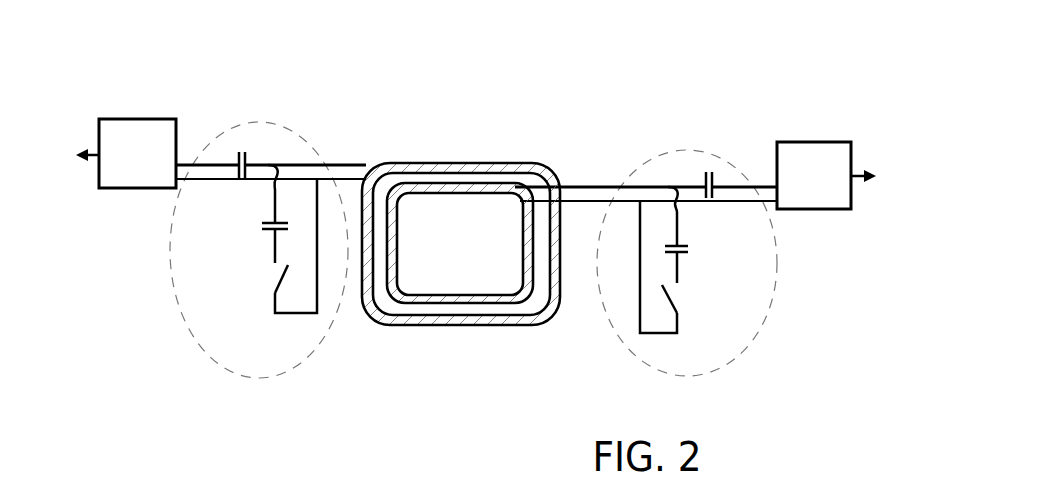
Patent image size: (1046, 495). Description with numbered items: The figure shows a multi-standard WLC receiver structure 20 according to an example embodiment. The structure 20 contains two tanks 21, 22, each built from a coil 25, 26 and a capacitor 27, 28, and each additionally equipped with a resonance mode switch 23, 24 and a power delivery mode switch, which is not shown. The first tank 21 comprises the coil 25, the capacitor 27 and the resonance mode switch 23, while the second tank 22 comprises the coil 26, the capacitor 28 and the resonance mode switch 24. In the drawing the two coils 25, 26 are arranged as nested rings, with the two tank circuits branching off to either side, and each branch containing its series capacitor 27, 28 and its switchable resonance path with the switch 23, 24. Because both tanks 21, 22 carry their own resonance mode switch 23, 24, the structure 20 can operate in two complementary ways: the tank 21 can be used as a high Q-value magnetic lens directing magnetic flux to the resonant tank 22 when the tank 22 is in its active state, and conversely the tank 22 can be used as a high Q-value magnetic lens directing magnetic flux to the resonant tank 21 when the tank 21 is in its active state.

The multi-standard WLC receiver structure 20 is at (510, 185).
The tank 21 is at (291, 228).
The tank 22 is at (646, 219).
The resonance mode switch 23 is at (268, 272).
The resonance mode switch 24 is at (685, 293).
The coil 25 is at (435, 167).
The coil 26 is at (488, 188).
The capacitor 27 is at (242, 146).
The capacitor 28 is at (708, 168).